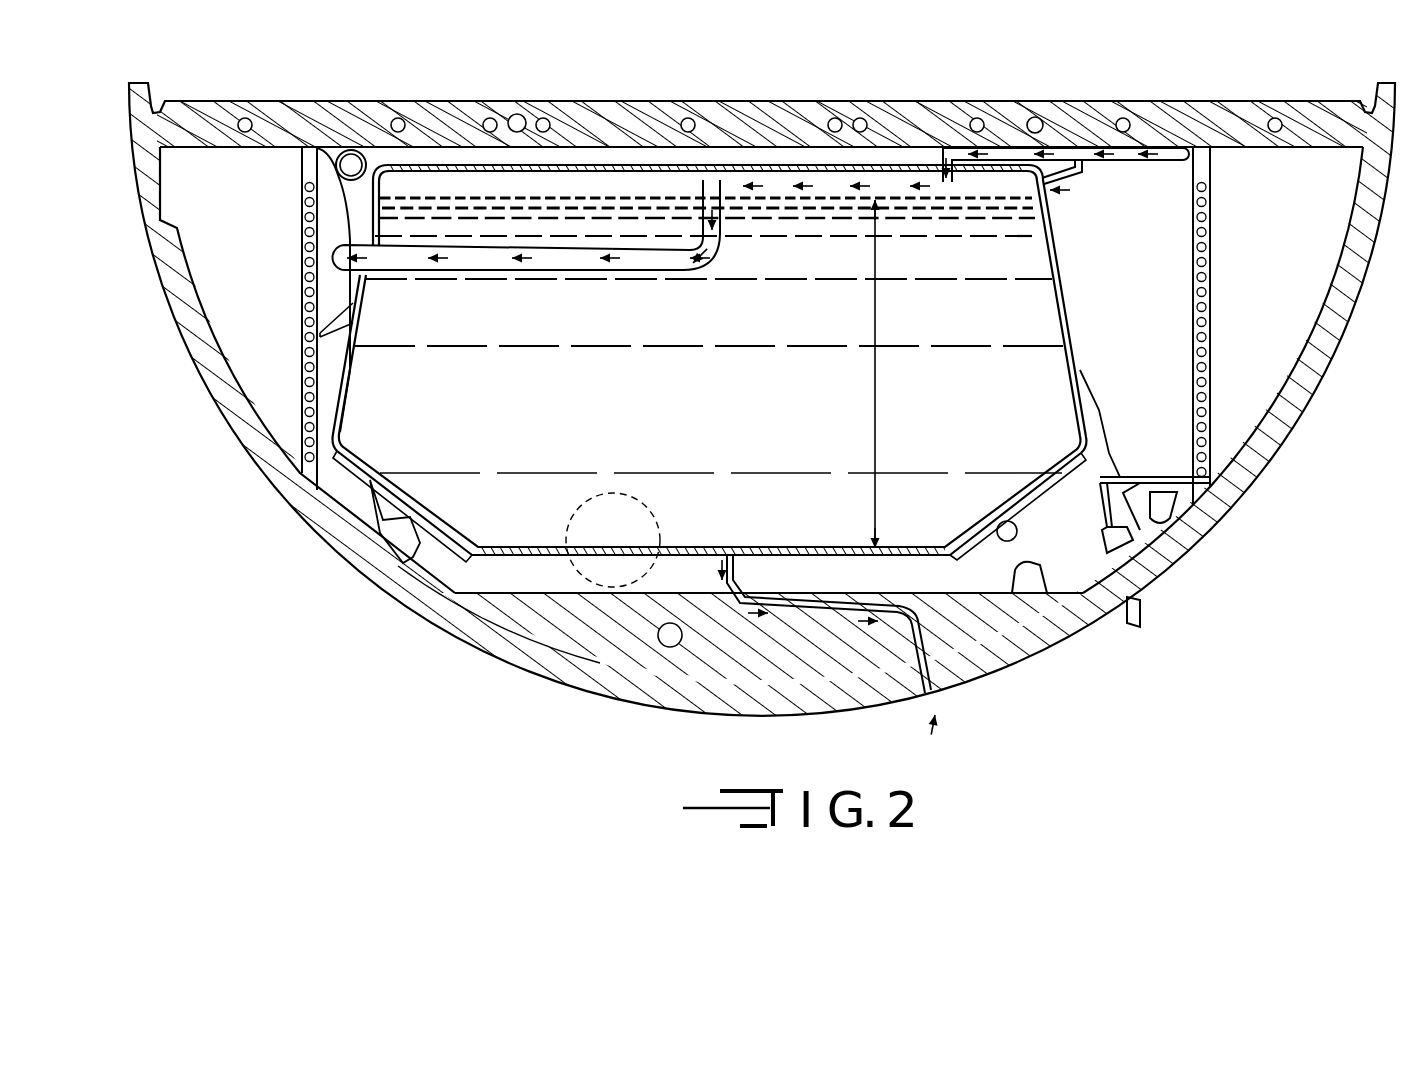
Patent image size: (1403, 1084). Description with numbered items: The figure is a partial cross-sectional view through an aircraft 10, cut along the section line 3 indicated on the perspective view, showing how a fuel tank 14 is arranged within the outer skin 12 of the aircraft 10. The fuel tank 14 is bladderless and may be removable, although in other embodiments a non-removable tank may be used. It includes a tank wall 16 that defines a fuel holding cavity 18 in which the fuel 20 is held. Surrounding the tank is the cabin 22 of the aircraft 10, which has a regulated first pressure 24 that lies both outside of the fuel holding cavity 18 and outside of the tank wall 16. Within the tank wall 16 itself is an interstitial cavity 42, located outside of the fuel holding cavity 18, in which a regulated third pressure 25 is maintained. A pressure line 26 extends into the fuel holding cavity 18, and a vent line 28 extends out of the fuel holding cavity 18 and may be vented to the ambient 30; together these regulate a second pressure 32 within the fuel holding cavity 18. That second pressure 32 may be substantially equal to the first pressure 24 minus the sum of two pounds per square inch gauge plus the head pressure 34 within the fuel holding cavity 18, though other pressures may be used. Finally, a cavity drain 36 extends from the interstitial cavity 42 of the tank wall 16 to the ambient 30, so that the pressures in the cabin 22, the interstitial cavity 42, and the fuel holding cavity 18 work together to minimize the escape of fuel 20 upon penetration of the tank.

The detail region 3 is at (577, 570).
The aircraft 10 is at (1305, 535).
The outer skin 12 is at (1210, 530).
The fuel tank 14 is at (353, 447).
The tank wall 16 is at (1062, 287).
The fuel holding cavity 18 is at (387, 403).
The fuel 20 is at (503, 385).
The cabin 22 is at (1153, 375).
The first pressure 24 is at (1155, 343).
The third pressure 25 is at (634, 555).
The pressure line 26 is at (779, 167).
The vent line 28 is at (311, 147).
The ambient 30 is at (334, 276).
The second pressure 32 is at (603, 437).
The head pressure 34 is at (877, 340).
The cavity drain 36 is at (740, 573).
The interstitial cavity 42 is at (628, 552).